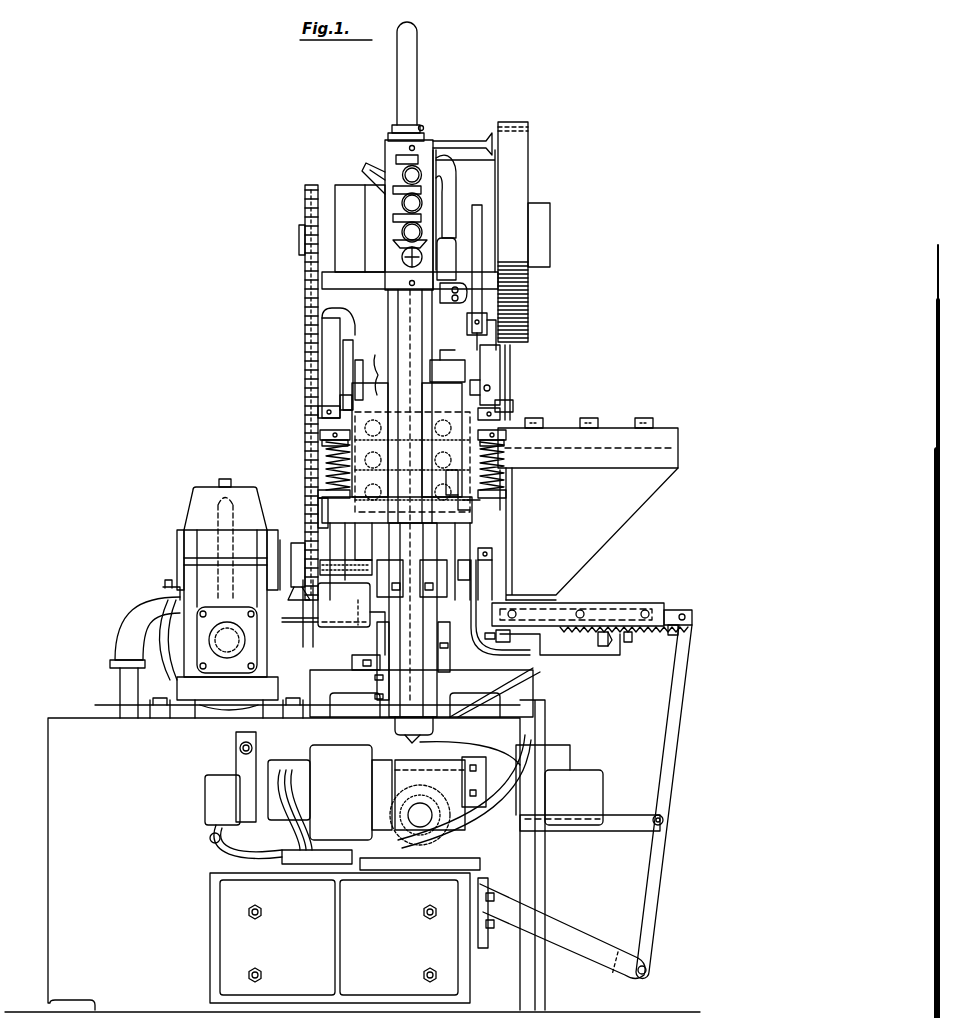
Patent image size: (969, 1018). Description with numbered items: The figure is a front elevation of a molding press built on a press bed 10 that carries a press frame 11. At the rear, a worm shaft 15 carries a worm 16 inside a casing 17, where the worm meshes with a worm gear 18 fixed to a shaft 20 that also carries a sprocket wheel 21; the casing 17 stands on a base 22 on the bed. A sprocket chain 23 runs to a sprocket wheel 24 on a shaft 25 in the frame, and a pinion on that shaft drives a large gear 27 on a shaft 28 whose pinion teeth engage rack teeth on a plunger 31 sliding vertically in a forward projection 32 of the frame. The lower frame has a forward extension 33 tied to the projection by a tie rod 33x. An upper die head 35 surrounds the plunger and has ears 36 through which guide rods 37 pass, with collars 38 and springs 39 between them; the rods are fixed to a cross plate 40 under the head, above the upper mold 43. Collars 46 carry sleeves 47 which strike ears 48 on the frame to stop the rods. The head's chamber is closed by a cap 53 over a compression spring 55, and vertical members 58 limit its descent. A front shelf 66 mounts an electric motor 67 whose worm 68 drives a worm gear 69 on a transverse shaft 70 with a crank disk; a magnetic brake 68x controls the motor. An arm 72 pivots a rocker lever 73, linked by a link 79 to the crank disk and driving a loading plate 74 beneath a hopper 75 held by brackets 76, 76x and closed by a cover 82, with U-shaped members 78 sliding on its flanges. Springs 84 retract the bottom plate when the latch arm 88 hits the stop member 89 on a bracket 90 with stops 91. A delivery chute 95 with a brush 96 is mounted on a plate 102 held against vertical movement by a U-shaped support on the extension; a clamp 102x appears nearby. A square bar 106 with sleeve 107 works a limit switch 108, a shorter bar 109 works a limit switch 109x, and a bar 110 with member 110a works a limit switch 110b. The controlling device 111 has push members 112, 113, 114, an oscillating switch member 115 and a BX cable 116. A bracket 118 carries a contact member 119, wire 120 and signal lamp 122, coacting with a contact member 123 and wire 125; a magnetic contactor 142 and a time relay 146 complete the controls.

The press bed 10 is at (48, 800).
The press frame 11 is at (368, 168).
The worm shaft 15 is at (222, 640).
The worm 16 is at (145, 600).
The casing 17 is at (186, 512).
The worm gear 18 is at (215, 495).
The shaft 20 is at (298, 543).
The sprocket wheel 21 is at (318, 510).
The base 22 is at (190, 706).
The sprocket chain 23 is at (305, 308).
The sprocket wheel 24 is at (305, 212).
The shaft 25 is at (300, 242).
The large gear 27 is at (528, 310).
The shaft 28 is at (498, 283).
The plunger 31 is at (388, 320).
The forward projection 32 is at (360, 290).
The forward extension 33 is at (392, 735).
The tie rod 33x is at (445, 748).
The upper die head 35 is at (326, 468).
The ears 36 is at (318, 490).
The guide rods 37 is at (380, 538).
The collars 38 is at (320, 432).
The springs 39 is at (322, 446).
The cross plate 40 is at (490, 555).
The upper mold 43 is at (371, 560).
The collars 46 is at (318, 412).
The sleeves 47 is at (322, 335).
The ears 48 is at (325, 277).
The cap 53 is at (372, 352).
The compression spring 55 is at (432, 378).
The vertical members 58 is at (352, 658).
The shelf 66 is at (210, 925).
The electric motor 67 is at (326, 748).
The worm 68 is at (400, 758).
The magnetic brake 68x is at (236, 750).
The worm gear 69 is at (402, 865).
The transverse shaft 70 is at (428, 865).
The arm 72 is at (562, 922).
The rocker lever 73 is at (640, 882).
The loading plate 74 is at (676, 610).
The hopper 75 is at (608, 530).
The bracket 76 is at (512, 590).
The bracket 76x is at (592, 428).
The U-shaped members 78 is at (598, 603).
The link 79 is at (610, 831).
The closing cover 82 is at (605, 452).
The springs 84 is at (670, 640).
The downward arm 88 is at (622, 650).
The adjustable stop member 89 is at (512, 638).
The bracket 90 is at (570, 650).
The adjustable stops 91 is at (630, 655).
The delivery chute 95 is at (340, 628).
The brush 96 is at (345, 565).
The plate 102 is at (305, 622).
The clamp 102x is at (378, 688).
The square bar 106 is at (482, 232).
The sleeve 107 is at (468, 328).
The limit switch 108 is at (440, 305).
The shorter bar 109 is at (500, 385).
The limit switch 109x is at (485, 360).
The bar 110 is at (340, 383).
The member 110a is at (318, 384).
The limit switch 110b is at (322, 360).
The controlling device 111 is at (430, 146).
The push member 112 is at (420, 176).
The push member 113 is at (400, 203).
The push member 114 is at (400, 232).
The oscillating switch member 115 is at (398, 257).
The BX cable 116 is at (416, 72).
The bracket 118 is at (492, 572).
The contact member 119 is at (470, 560).
The wire 120 is at (487, 600).
The signal lamp 122 is at (472, 505).
The contact member 123 is at (455, 520).
The wire 125 is at (505, 480).
The magnetic contactor 142 is at (293, 765).
The time relay 146 is at (598, 758).